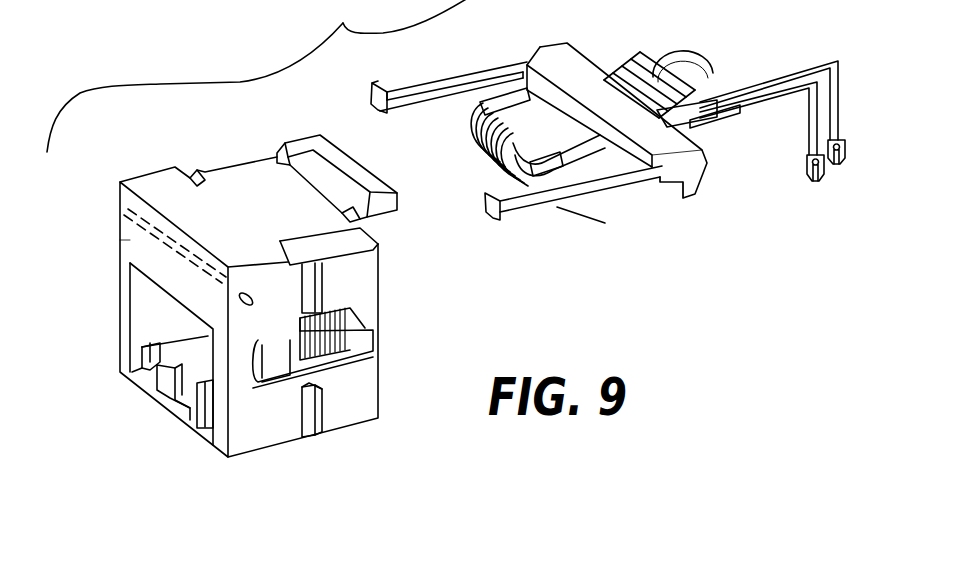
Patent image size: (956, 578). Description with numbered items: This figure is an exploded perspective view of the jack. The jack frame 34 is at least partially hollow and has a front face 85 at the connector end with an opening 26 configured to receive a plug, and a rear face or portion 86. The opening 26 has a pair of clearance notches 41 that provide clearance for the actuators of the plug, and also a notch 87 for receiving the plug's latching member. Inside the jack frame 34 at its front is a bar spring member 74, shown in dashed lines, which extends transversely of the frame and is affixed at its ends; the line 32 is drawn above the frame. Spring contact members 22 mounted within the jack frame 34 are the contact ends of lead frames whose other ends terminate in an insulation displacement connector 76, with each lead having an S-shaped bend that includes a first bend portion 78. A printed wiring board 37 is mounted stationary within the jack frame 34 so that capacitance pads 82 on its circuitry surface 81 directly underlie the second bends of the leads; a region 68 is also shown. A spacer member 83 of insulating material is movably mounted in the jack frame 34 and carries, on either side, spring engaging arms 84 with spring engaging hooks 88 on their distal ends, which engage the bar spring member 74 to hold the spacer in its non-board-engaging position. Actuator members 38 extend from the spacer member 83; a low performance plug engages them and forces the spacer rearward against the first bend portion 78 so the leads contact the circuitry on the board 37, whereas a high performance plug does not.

The spring contact members 22 is at (538, 173).
The opening 26 is at (148, 293).
The cable 32 is at (257, 76).
The jack frame 34 is at (248, 140).
The printed wiring board 37 is at (622, 44).
The actuator members 38 is at (697, 211).
The clearance notches 41 is at (140, 362).
The base 68 is at (731, 147).
The bar spring member 74 is at (128, 212).
The insulation displacement connector 76 is at (836, 188).
The first bend portion 78 is at (637, 201).
The surface 81 is at (769, 108).
The capacitance pads 82 is at (712, 74).
The spacer member 83 is at (568, 63).
The spring engaging arms 84 is at (493, 45).
The front face 85 is at (130, 248).
The rear face 86 is at (378, 296).
The notch 87 is at (173, 395).
The spring engaging hooks 88 is at (388, 87).